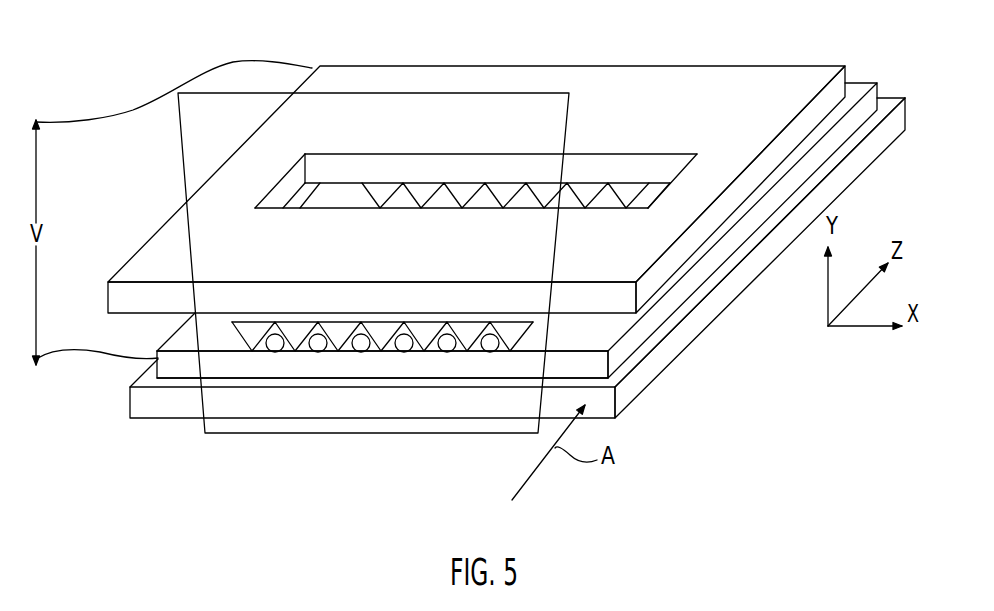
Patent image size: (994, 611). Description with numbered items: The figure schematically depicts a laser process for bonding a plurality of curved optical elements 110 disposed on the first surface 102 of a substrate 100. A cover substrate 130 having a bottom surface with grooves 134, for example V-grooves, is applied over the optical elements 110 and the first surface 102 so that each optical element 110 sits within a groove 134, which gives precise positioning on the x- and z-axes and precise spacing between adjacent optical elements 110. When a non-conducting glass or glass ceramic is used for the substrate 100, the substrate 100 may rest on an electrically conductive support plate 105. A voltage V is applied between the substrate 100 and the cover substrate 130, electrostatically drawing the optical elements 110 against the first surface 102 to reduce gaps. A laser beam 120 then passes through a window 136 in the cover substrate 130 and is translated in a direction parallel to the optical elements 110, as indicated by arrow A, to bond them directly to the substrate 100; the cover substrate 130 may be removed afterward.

The cover substrate 130 is at (812, 52).
The window 136 is at (645, 140).
The groove 134 is at (373, 352).
The optical element 110 is at (487, 343).
The substrate 100 is at (653, 323).
The first surface 102 is at (597, 340).
The laser beam 120 is at (183, 405).
The electrically conductive support plate 105 is at (738, 284).